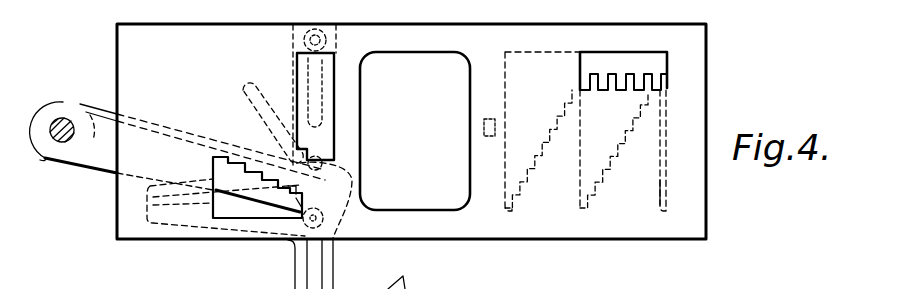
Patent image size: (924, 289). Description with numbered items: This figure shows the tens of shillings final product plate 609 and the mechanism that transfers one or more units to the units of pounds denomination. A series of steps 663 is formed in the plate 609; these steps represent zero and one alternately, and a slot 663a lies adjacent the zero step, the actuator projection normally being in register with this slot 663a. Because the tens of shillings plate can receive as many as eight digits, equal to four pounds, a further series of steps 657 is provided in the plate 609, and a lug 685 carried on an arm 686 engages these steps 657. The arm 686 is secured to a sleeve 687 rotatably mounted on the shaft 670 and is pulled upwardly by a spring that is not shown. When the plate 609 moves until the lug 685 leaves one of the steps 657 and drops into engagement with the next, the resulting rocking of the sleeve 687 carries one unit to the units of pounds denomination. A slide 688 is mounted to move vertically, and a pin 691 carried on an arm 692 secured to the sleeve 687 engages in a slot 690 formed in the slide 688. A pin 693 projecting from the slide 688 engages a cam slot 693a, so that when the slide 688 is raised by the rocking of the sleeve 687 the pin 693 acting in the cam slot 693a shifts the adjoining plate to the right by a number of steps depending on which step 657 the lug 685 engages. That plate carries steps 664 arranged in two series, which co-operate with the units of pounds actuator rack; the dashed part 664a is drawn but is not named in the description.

The tens of shillings final product plate 609 is at (410, 52).
The series of steps 657 is at (246, 157).
The steps 663 is at (640, 74).
The slot 663a is at (667, 84).
The steps 664 is at (557, 117).
The guide slot 664a is at (660, 187).
The shaft 670 is at (68, 118).
The lug 685 is at (300, 204).
The arm 686 is at (103, 172).
The sleeve 687 is at (47, 160).
The slide 688 is at (330, 277).
The slot 690 is at (182, 200).
The pin 691 is at (328, 172).
The arm 692 is at (165, 132).
The pin 693 is at (337, 160).
The cam slot 693a is at (257, 90).